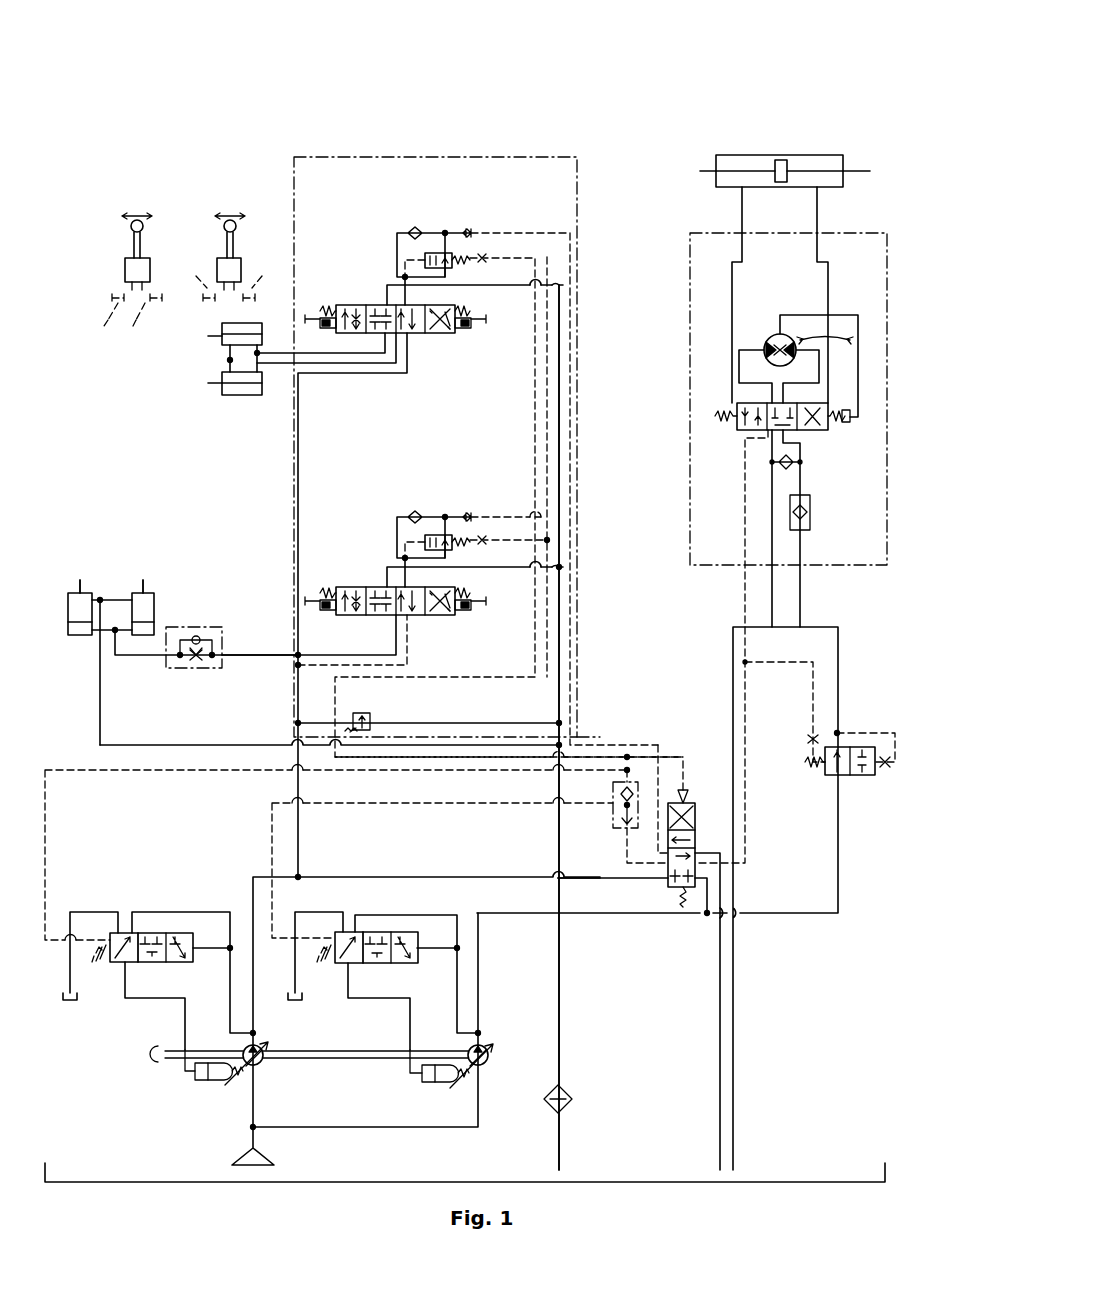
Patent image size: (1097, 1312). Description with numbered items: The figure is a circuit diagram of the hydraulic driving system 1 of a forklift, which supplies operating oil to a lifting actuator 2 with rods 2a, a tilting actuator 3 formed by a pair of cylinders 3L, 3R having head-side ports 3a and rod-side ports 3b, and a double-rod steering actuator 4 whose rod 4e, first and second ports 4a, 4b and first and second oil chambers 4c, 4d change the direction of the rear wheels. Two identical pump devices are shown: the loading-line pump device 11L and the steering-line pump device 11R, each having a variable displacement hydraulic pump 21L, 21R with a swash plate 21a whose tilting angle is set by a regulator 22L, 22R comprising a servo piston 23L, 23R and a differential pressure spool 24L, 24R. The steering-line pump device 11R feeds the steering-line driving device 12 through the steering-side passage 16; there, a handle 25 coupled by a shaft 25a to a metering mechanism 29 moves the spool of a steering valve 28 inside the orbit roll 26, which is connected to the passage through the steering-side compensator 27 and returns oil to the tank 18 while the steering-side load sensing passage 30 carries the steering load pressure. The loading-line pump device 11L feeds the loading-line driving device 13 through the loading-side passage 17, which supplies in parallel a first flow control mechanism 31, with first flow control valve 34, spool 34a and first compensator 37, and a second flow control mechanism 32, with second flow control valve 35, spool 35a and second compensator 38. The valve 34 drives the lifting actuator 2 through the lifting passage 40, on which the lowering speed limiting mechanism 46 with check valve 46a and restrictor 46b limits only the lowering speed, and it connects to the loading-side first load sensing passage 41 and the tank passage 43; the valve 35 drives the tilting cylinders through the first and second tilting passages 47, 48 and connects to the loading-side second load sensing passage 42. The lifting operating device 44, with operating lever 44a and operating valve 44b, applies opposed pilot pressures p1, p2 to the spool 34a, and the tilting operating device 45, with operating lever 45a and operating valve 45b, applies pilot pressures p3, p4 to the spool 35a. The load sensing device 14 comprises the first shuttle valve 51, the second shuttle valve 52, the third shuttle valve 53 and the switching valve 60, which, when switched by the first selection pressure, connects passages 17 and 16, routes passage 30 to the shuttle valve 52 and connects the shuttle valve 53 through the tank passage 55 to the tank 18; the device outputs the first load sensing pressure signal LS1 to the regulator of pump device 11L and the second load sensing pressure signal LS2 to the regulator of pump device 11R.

The hydraulic driving system 1 is at (875, 56).
The lifting actuator 2 is at (75, 567).
The rods 2a is at (140, 597).
The tilting actuator 3 is at (214, 409).
The cylinder 3L is at (260, 323).
The cylinder 3R is at (243, 395).
The head-side ports 3a is at (227, 352).
The rod-side ports 3b is at (260, 354).
The steering actuator 4 is at (788, 122).
The first port 4a is at (742, 190).
The second port 4b is at (818, 192).
The first oil chamber 4c is at (732, 160).
The second oil chamber 4d is at (828, 160).
The rod 4e is at (778, 158).
The loading-line pump device 11L is at (173, 878).
The steering-line pump device 11R is at (505, 975).
The steering-line driving device 12 is at (931, 223).
The loading-line driving device 13 is at (371, 211).
The load sensing device 14 is at (524, 129).
The steering-side passage 16 is at (838, 890).
The loading-side passage 17 is at (297, 790).
The tank 18 is at (866, 1168).
The hydraulic pump 21L is at (258, 1065).
The hydraulic pump 21R is at (483, 1065).
The swash plate 21a is at (264, 1043).
The regulator 22L is at (129, 900).
The regulator 22R is at (428, 899).
The servo piston 23L is at (218, 1082).
The servo piston 23R is at (448, 1082).
The differential pressure spool 24L is at (153, 965).
The differential pressure spool 24R is at (382, 967).
The handle 25 is at (736, 432).
The shaft 25a is at (838, 316).
The orbit roll 26 is at (862, 328).
The steering-side compensator 27 is at (845, 778).
The steering valve 28 is at (808, 433).
The metering mechanism 29 is at (773, 338).
The steering-side load sensing passage 30 is at (745, 602).
The first flow control mechanism 31 is at (432, 496).
The second flow control mechanism 32 is at (432, 213).
The first flow control valve 34 is at (370, 587).
The spool 34a is at (443, 618).
The second flow control valve 35 is at (352, 305).
The spool 35a is at (443, 335).
The first compensator 37 is at (460, 552).
The second compensator 38 is at (460, 266).
The lifting passage 40 is at (242, 660).
The loading-side first load sensing passage 41 is at (447, 513).
The loading-side second load sensing passage 42 is at (447, 230).
The tank passage 43 is at (565, 437).
The lifting operating device 44 is at (126, 196).
The operating lever 44a is at (132, 218).
The operating valve 44b is at (127, 262).
The tilting operating device 45 is at (218, 196).
The operating lever 45a is at (237, 218).
The operating valve 45b is at (238, 262).
The lowering speed limiting mechanism 46 is at (225, 615).
The check valve 46a is at (194, 634).
The restrictor 46b is at (197, 665).
The first tilting passage 47 is at (335, 367).
The second tilting passage 48 is at (383, 368).
The first shuttle valve 51 is at (472, 516).
The second shuttle valve 52 is at (472, 232).
The third shuttle valve 53 is at (614, 822).
The tank passage 55 is at (708, 856).
The switching valve 60 is at (686, 793).
The first load sensing pressure signal LS1 is at (200, 770).
The second load sensing pressure signal LS2 is at (352, 805).
The pilot pressure p1 is at (98, 332).
The pilot pressure p2 is at (136, 332).
The pilot pressure p3 is at (191, 270).
The pilot pressure p4 is at (267, 270).